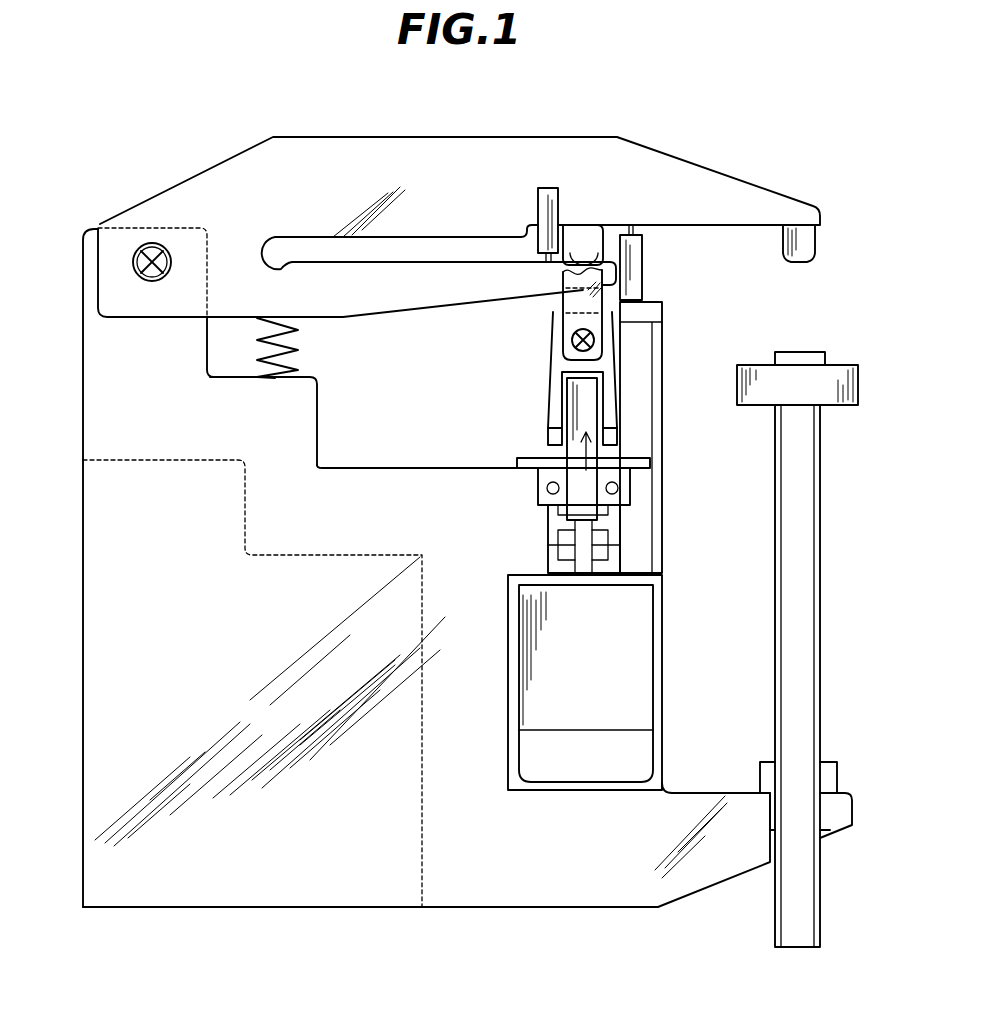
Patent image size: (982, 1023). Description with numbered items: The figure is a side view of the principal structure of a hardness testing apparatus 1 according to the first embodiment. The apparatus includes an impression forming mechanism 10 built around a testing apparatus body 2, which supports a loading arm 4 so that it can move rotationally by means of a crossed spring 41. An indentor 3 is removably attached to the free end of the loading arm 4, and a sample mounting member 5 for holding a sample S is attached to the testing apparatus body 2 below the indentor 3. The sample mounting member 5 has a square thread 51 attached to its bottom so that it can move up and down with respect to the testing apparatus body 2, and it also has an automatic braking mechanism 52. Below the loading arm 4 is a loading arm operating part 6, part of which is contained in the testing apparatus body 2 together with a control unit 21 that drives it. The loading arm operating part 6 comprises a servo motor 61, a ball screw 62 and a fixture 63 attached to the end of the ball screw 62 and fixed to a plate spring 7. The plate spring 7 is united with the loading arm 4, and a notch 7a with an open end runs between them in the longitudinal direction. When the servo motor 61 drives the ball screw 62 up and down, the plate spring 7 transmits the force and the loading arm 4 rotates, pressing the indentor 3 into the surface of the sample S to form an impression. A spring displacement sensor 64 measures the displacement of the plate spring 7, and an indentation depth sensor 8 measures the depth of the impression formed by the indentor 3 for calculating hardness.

The hardness testing apparatus 1 is at (613, 81).
The testing apparatus body 2 is at (562, 895).
The control unit 21 is at (237, 897).
The indentor 3 is at (805, 243).
The loading arm 4 is at (722, 200).
The crossed spring 41 is at (132, 270).
The sample mounting member 5 is at (848, 402).
The square thread 51 is at (822, 592).
The automatic braking mechanism 52 is at (830, 770).
The loading arm operating part 6 is at (600, 467).
The servo motor 61 is at (628, 708).
The ball screw 62 is at (598, 410).
The fixture 63 is at (562, 300).
The spring displacement sensor 64 is at (553, 200).
The plate spring 7 is at (350, 305).
The notch 7a is at (494, 243).
The indentation depth sensor 8 is at (645, 265).
The impression forming mechanism 10 is at (745, 248).
The sample S is at (795, 357).